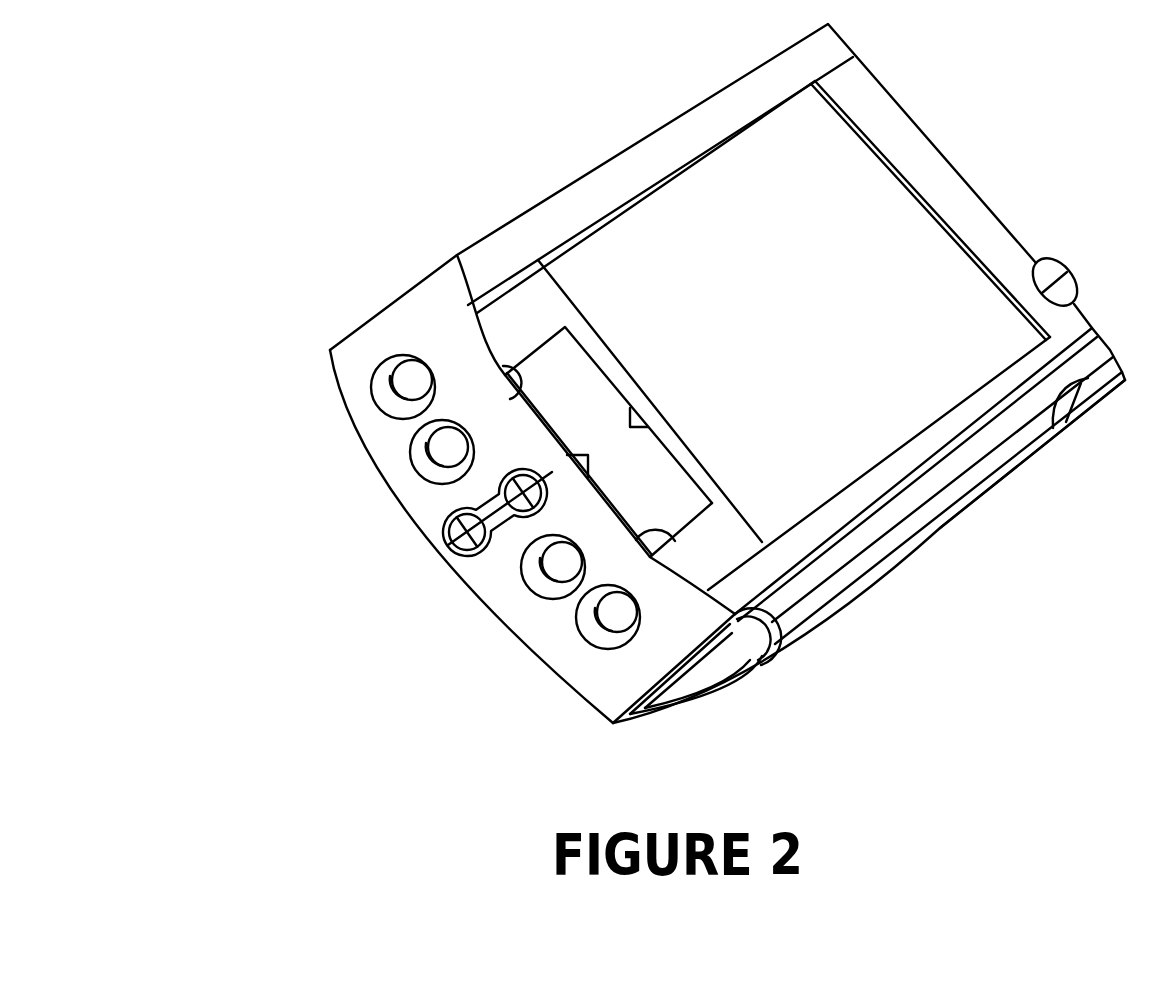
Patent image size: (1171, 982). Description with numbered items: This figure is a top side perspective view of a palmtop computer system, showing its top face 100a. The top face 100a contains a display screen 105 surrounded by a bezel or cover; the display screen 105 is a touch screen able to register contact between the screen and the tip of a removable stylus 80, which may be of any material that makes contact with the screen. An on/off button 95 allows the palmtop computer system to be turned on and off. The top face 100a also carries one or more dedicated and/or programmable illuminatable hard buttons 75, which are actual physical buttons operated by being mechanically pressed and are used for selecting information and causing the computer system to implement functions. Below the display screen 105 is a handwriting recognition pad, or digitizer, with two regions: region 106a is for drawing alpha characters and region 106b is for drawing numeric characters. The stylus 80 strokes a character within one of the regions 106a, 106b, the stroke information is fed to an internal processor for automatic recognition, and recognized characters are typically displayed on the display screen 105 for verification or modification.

The top face 100a is at (215, 83).
The display screen 105 is at (816, 326).
The region 106a is at (594, 408).
The region 106b is at (680, 501).
The illuminatable hard buttons 75 is at (388, 402).
The stylus 80 is at (968, 472).
The on/off button 95 is at (1077, 280).